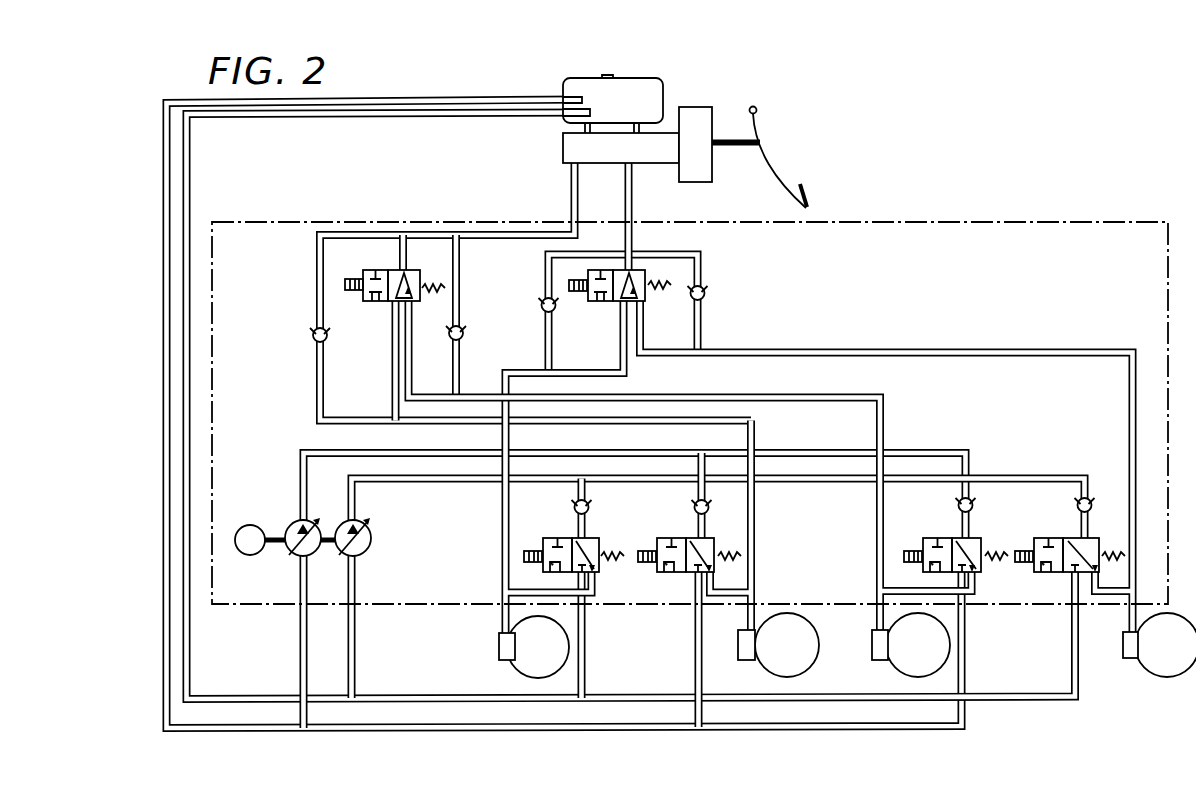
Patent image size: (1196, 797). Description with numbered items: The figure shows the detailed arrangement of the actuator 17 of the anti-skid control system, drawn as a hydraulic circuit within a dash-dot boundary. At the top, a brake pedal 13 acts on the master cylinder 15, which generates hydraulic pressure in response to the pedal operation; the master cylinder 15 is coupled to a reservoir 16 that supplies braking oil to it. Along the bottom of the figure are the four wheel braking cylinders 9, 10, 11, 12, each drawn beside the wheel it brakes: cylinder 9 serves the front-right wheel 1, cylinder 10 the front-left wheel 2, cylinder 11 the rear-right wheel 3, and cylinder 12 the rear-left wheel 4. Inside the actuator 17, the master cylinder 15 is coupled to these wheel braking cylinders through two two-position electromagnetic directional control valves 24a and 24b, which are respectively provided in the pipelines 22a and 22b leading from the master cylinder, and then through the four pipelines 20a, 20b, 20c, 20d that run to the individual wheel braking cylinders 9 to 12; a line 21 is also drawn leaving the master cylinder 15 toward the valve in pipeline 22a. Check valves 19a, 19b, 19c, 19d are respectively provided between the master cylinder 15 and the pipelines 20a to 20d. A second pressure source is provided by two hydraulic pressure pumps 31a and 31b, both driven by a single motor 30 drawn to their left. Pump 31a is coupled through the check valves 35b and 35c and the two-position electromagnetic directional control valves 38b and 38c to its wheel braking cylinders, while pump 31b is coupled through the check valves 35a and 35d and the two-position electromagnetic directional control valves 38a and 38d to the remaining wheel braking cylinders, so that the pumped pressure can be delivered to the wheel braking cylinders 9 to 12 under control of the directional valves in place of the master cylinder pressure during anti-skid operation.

The front-right wheel 1 is at (520, 670).
The front-left wheel 2 is at (770, 670).
The rear-right wheel 3 is at (907, 670).
The rear-left wheel 4 is at (1150, 667).
The wheel braking cylinder 9 is at (498, 650).
The wheel braking cylinder 10 is at (737, 643).
The wheel braking cylinder 11 is at (872, 643).
The wheel braking cylinder 12 is at (1122, 640).
The brake pedal 13 is at (773, 160).
The master cylinder 15 is at (653, 157).
The reservoir 16 is at (660, 98).
The actuator 17 is at (1077, 221).
The check valve 19a is at (542, 302).
The check valve 19b is at (312, 330).
The check valve 19c is at (470, 333).
The check valve 19d is at (705, 292).
The pipeline 20a is at (500, 532).
The pipeline 20b is at (755, 556).
The pipeline 20c is at (876, 531).
The pipeline 20d is at (1128, 430).
The master cylinder passage 21 is at (632, 237).
The pipeline 22a is at (652, 268).
The pipeline 22b is at (400, 252).
The two-position electromagnetic directional control valve 24a is at (650, 293).
The two-position electromagnetic directional control valve 24b is at (412, 270).
The motor 30 is at (244, 524).
The hydraulic pressure pump 31a is at (290, 522).
The hydraulic pressure pump 31b is at (375, 537).
The check valve 35a is at (575, 503).
The check valve 35b is at (695, 503).
The check valve 35c is at (960, 502).
The check valve 35d is at (1078, 502).
The two-position electromagnetic directional control valve 38a is at (593, 541).
The two-position electromagnetic directional control valve 38b is at (728, 533).
The two-position electromagnetic directional control valve 38c is at (1002, 533).
The two-position electromagnetic directional control valve 38d is at (1113, 533).